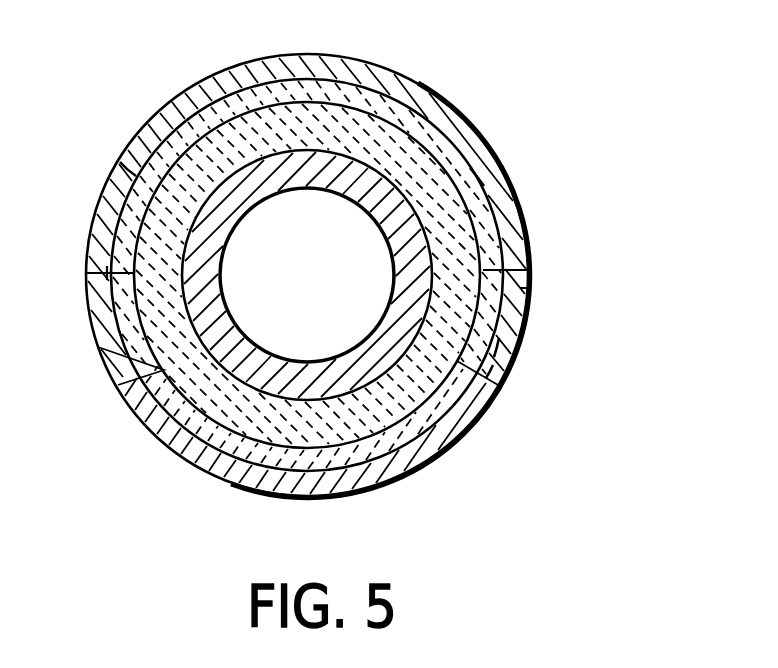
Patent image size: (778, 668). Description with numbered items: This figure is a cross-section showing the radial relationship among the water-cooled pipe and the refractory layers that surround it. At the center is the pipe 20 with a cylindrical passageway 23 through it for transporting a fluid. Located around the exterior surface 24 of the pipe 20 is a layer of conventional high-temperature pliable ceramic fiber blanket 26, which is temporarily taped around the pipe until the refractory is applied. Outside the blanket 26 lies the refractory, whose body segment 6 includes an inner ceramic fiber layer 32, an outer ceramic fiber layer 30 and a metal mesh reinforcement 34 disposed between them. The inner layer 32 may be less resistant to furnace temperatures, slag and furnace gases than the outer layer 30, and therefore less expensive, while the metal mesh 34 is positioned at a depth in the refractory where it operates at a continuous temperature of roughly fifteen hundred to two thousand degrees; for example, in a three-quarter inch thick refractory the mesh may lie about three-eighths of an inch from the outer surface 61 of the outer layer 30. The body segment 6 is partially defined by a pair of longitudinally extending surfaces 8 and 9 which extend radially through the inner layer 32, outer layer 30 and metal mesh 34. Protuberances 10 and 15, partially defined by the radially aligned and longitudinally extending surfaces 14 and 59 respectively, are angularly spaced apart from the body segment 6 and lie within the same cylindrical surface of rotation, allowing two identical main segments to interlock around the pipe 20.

The partial cylindrical body segment 6 is at (373, 58).
The outer surface 61 is at (258, 60).
The longitudinally extending surface 59 is at (128, 170).
The longitudinally extending surface 9 is at (133, 187).
The protuberance 15 is at (100, 284).
The longitudinally extending surface 14 is at (463, 183).
The longitudinally extending surface 8 is at (482, 178).
The cylindrical passageway 23 is at (340, 275).
The pipe 20 is at (433, 257).
The protuberance 10 is at (533, 288).
The exterior surface 24 is at (483, 307).
The ceramic fiber blanket 26 is at (433, 303).
The inner ceramic fiber layer 32 is at (503, 347).
The metal mesh reinforcement 34 is at (480, 368).
The outer ceramic fiber layer 30 is at (487, 370).